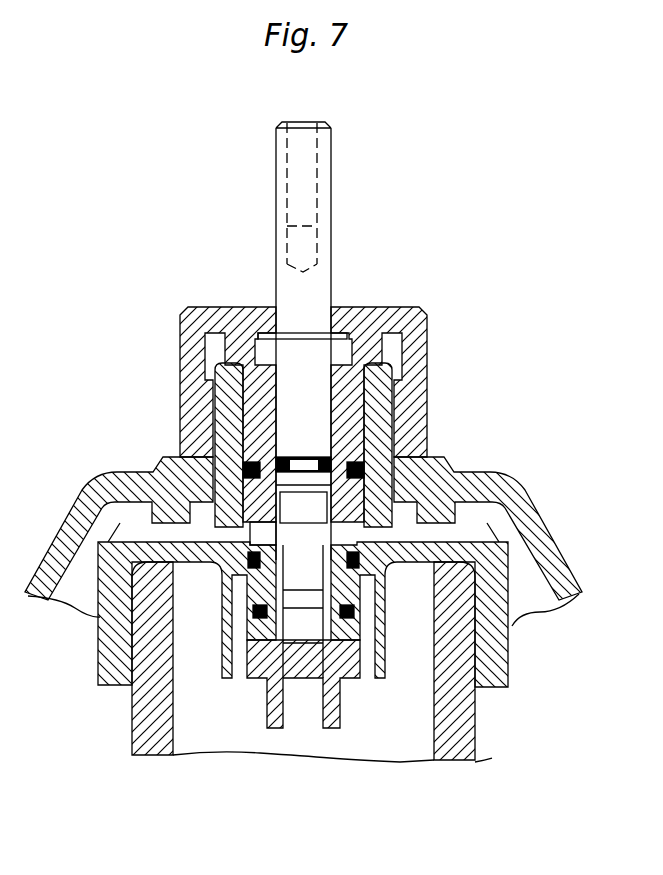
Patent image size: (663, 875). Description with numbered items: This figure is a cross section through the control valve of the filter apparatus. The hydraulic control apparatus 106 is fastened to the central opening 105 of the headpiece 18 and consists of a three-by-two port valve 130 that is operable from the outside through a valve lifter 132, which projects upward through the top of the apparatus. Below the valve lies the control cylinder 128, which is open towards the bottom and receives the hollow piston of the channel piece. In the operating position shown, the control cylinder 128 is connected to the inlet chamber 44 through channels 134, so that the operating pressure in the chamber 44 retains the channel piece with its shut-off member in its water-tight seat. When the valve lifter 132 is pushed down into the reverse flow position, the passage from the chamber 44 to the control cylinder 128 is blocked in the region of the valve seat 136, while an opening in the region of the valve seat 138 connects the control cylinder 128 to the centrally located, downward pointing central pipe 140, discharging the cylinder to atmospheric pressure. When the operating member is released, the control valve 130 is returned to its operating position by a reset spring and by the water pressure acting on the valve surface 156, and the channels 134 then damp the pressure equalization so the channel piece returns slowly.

The hydraulic control apparatus 106 is at (424, 324).
The valve lifter 132 is at (300, 383).
The 3/2 port valve 130 is at (320, 425).
The central opening 105 is at (352, 458).
The channels 134 is at (370, 502).
The valve surface 156 is at (228, 495).
The headpiece 18 is at (488, 482).
The inlet chamber 44 is at (542, 580).
The valve seat 136 is at (262, 585).
The valve seat 138 is at (268, 632).
The central pipe 140 is at (318, 720).
The control cylinder 128 is at (437, 722).